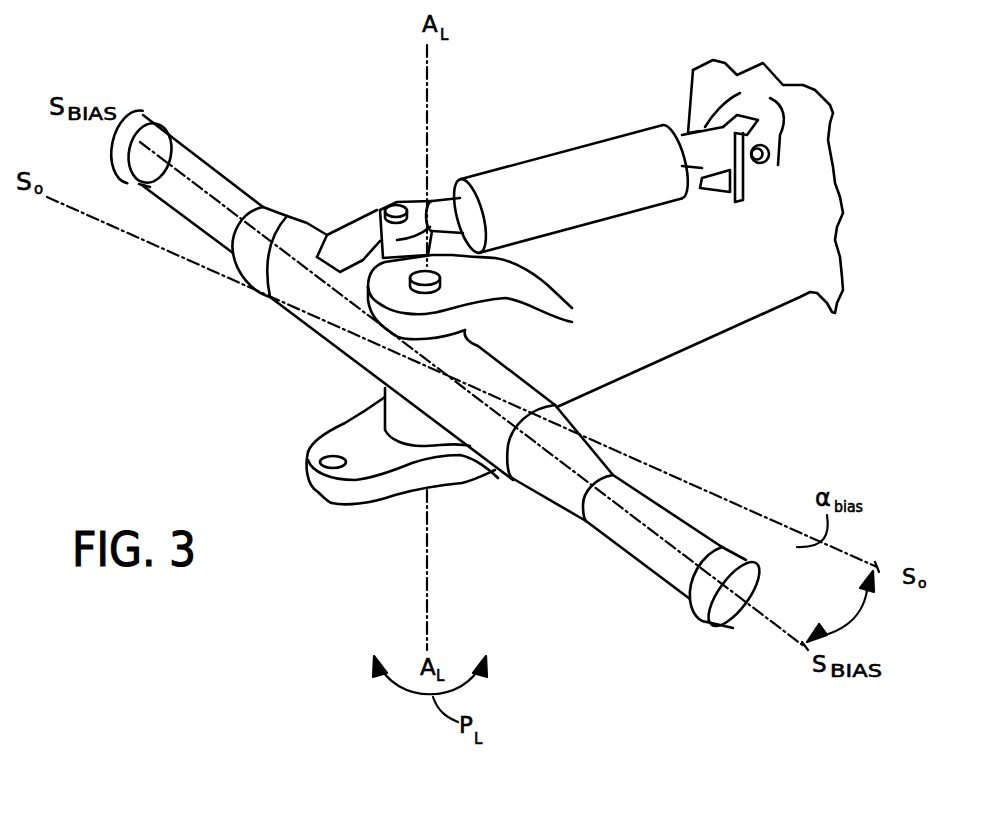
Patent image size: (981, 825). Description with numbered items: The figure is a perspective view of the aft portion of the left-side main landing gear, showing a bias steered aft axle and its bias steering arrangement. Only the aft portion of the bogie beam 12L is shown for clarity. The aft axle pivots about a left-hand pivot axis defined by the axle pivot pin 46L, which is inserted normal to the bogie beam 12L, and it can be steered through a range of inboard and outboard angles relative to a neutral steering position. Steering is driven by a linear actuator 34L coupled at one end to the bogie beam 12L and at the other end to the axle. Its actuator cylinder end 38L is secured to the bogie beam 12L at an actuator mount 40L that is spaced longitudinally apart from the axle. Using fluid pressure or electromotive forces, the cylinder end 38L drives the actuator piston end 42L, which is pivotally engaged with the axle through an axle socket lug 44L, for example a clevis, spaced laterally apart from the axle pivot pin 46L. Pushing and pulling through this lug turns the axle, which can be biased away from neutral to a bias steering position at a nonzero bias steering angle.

The bogie beam 12L is at (812, 97).
The actuator 34L is at (561, 113).
The actuator cylinder end 38L is at (618, 150).
The actuator mount 40L is at (758, 182).
The actuator piston end 42L is at (445, 220).
The axle socket lug 44L is at (363, 227).
The axle pivot pin 46L is at (427, 437).